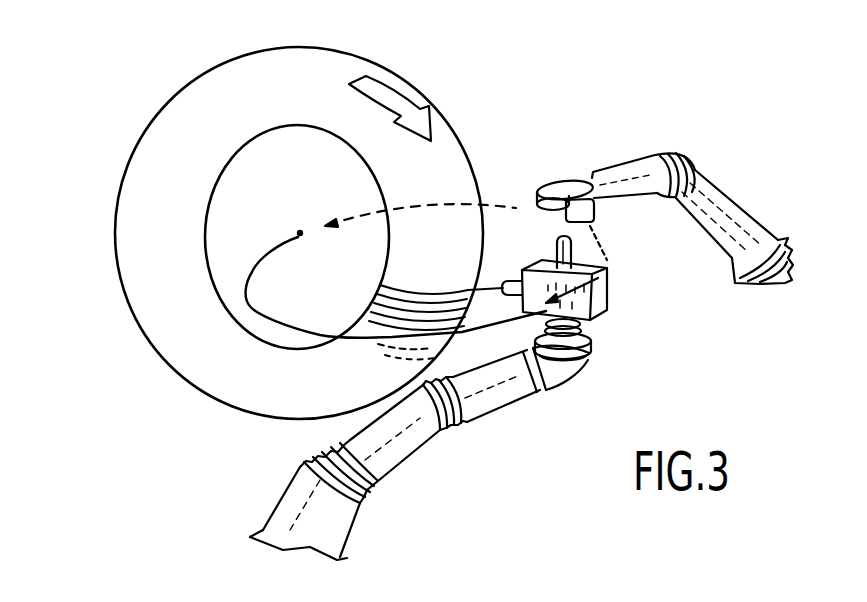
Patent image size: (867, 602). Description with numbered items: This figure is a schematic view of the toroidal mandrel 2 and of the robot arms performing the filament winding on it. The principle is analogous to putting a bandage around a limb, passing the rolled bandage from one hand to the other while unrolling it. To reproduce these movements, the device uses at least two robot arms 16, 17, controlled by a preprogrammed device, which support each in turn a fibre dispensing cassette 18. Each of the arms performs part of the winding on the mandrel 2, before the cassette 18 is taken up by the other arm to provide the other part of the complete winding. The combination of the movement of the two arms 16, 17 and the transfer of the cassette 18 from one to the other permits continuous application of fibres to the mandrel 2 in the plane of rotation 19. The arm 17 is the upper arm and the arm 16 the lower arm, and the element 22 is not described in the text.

The mandrel 2 is at (217, 377).
The robot arm 16 is at (417, 433).
The robot arm 17 is at (723, 217).
The fibre dispensing cassette 18 is at (598, 300).
The plane of rotation 19 is at (250, 304).
The coupling 22 is at (572, 258).